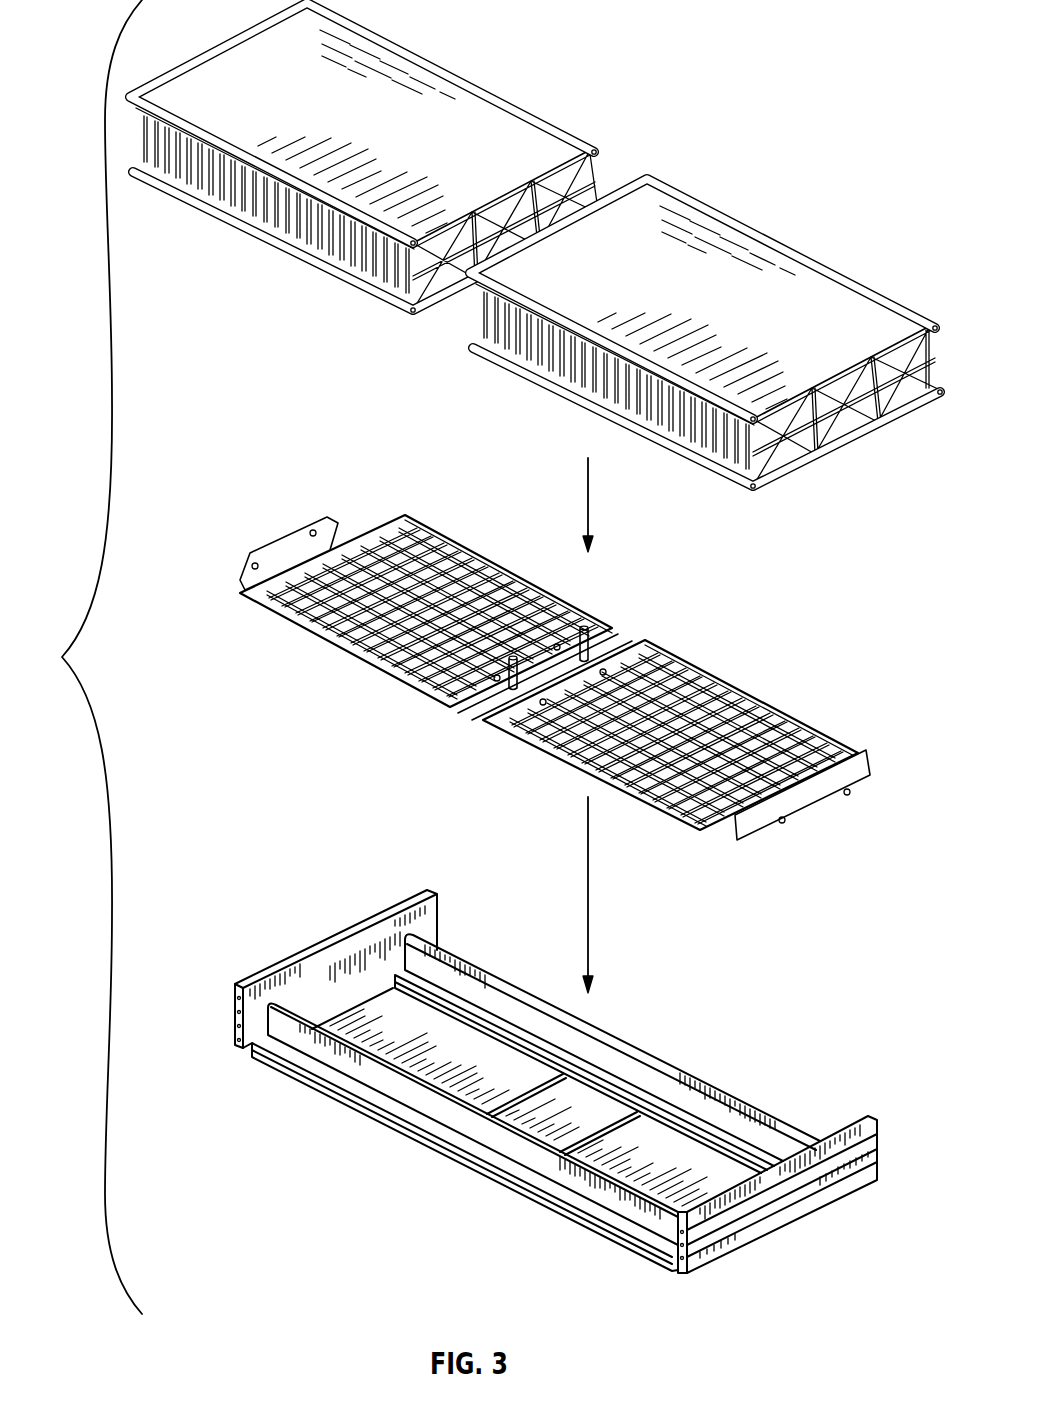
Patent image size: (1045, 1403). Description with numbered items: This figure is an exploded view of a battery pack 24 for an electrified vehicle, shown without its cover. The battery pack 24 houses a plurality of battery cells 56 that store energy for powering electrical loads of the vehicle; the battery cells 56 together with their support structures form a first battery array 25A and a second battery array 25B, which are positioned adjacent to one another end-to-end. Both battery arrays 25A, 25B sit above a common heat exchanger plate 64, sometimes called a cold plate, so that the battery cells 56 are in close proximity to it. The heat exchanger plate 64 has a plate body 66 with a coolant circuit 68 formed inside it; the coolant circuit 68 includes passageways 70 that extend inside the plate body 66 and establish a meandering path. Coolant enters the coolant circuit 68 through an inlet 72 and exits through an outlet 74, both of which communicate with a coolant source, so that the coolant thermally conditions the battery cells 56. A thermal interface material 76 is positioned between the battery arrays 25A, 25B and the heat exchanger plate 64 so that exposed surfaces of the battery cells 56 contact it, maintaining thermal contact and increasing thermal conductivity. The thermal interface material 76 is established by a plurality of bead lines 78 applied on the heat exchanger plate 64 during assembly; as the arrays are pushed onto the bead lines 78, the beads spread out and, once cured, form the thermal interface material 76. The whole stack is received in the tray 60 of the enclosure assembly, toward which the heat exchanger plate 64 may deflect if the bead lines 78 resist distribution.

The battery pack 24 is at (313, 657).
The first battery array 25A is at (482, 123).
The second battery array 25B is at (769, 267).
The battery cells 56 is at (263, 222).
The tray 60 is at (574, 1226).
The heat exchanger plate 64 is at (558, 654).
The plate body 66 is at (680, 723).
The coolant circuit 68 is at (773, 722).
The passageways 70 is at (667, 710).
The inlet 72 is at (505, 682).
The outlet 74 is at (614, 656).
The thermal interface material 76 is at (437, 534).
The bead lines 78 is at (363, 520).